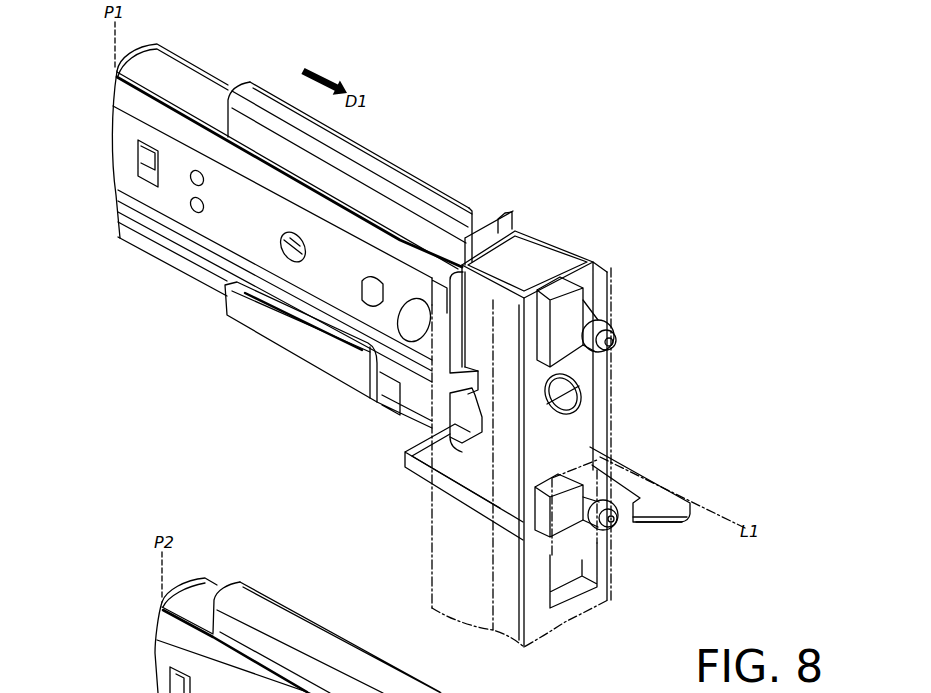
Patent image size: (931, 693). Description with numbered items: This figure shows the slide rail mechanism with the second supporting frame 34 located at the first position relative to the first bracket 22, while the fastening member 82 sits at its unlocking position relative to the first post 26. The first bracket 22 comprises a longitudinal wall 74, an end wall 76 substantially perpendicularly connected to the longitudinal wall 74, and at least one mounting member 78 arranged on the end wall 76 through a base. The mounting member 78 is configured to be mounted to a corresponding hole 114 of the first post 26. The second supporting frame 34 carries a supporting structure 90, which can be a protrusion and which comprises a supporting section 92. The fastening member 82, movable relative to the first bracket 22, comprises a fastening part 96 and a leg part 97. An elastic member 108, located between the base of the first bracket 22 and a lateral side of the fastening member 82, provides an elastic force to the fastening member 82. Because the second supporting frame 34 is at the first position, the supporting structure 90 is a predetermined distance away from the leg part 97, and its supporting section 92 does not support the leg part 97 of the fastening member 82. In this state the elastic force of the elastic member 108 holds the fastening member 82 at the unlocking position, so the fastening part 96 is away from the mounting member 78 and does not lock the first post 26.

The second supporting frame 34 is at (146, 266).
The first bracket 22 is at (277, 364).
The supporting section 92 is at (387, 393).
The supporting structure 90 is at (403, 400).
The leg part 97 is at (480, 379).
The elastic member 108 is at (450, 490).
The longitudinal wall 74 is at (509, 228).
The end wall 76 is at (560, 298).
The first post 26 is at (612, 413).
The mounting member 78 is at (590, 283).
The hole 114 is at (596, 360).
The fastening member 82 is at (690, 487).
The fastening part 96 is at (643, 512).